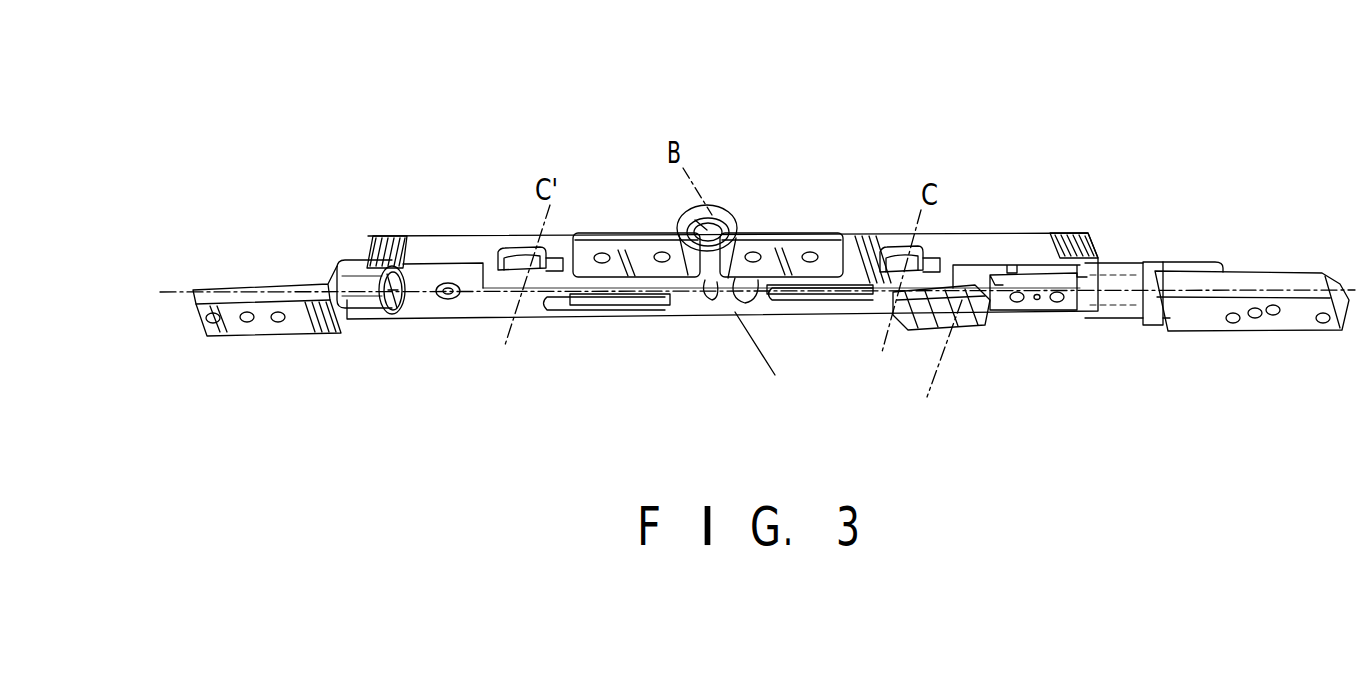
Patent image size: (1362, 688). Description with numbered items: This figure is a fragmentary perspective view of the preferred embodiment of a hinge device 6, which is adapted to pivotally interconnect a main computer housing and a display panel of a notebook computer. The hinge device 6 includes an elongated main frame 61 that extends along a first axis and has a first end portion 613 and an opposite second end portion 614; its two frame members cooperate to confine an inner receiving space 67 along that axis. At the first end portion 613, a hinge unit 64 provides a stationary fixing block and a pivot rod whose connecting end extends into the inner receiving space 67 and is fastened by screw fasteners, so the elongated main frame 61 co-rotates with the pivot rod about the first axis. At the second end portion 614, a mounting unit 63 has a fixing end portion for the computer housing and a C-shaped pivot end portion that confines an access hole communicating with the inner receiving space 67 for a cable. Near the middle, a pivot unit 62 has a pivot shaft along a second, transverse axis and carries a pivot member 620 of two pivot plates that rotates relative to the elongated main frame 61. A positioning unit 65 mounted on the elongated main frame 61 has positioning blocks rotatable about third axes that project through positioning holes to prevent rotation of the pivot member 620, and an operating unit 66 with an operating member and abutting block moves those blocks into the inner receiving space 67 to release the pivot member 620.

The hinge device 6 is at (592, 150).
The elongated main frame 61 is at (477, 228).
The first end portion 613 is at (1050, 233).
The second end portion 614 is at (428, 236).
The pivot unit 62 is at (678, 203).
The pivot member 620 is at (773, 233).
The mounting unit 63 is at (283, 340).
The hinge unit 64 is at (1147, 358).
The positioning unit 65 is at (890, 238).
The operating unit 66 is at (960, 340).
The inner receiving space 67 is at (420, 283).